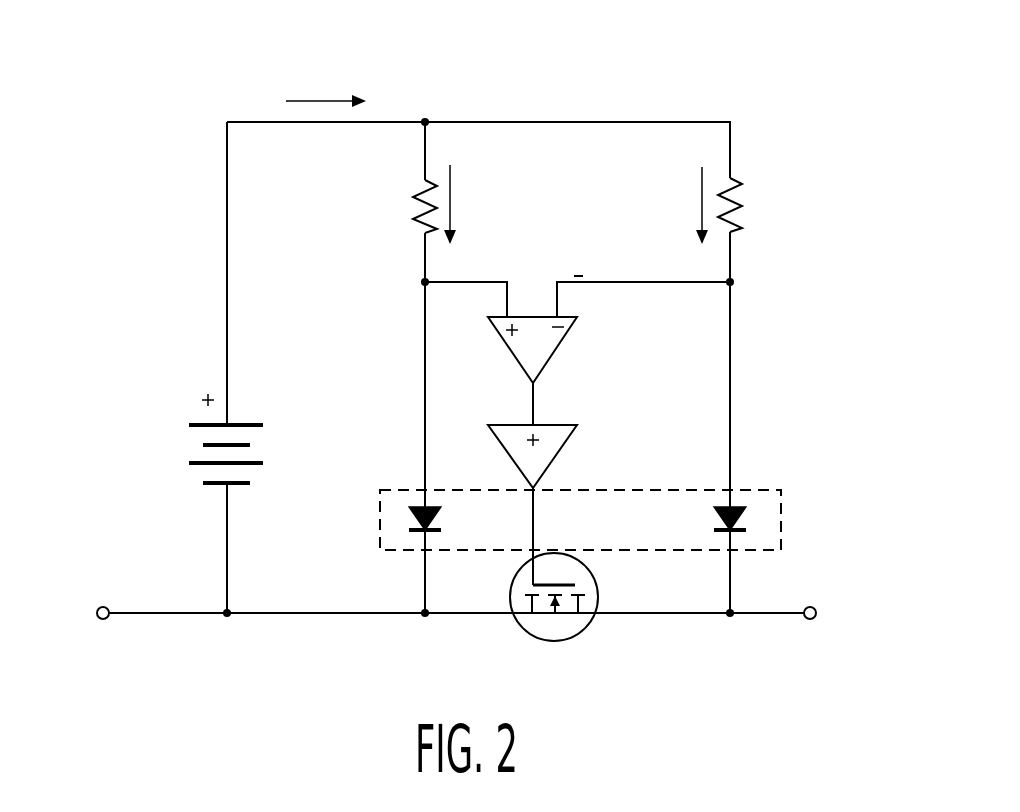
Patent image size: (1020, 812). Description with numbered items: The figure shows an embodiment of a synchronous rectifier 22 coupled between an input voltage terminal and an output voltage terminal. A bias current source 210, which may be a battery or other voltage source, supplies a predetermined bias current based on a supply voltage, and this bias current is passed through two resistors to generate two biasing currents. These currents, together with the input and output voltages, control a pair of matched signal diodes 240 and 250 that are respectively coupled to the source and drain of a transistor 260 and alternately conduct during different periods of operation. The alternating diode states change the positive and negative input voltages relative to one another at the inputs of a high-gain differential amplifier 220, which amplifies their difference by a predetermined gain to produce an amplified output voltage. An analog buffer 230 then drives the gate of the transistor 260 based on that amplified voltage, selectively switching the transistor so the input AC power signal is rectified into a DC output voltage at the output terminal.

The synchronous rectifier 22 is at (864, 37).
The bias current source 210 is at (247, 423).
The differential amplifier 220 is at (567, 338).
The analog buffer 230 is at (563, 452).
The signal diode 240 is at (413, 504).
The signal diode 250 is at (742, 502).
The transistor 260 is at (594, 626).